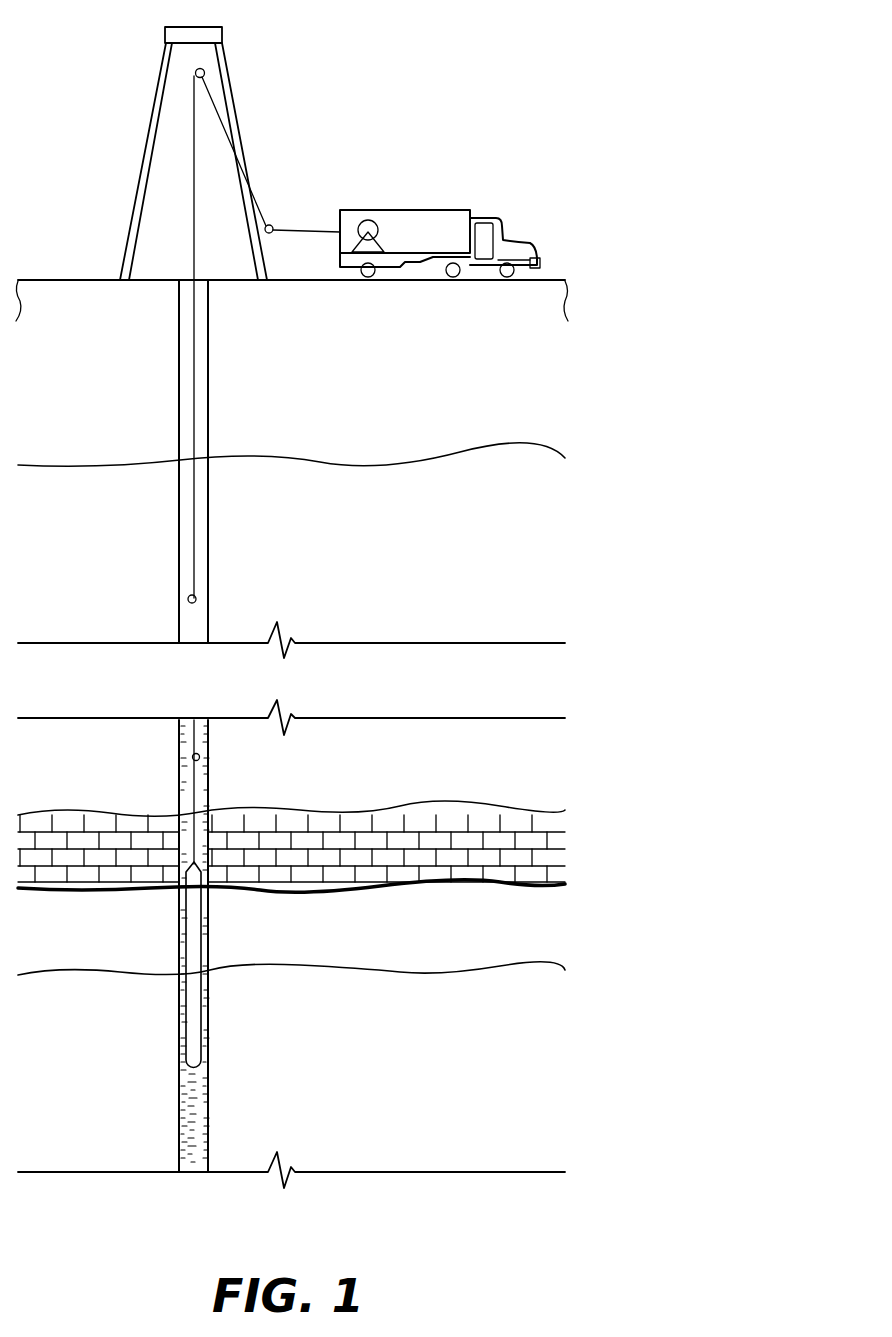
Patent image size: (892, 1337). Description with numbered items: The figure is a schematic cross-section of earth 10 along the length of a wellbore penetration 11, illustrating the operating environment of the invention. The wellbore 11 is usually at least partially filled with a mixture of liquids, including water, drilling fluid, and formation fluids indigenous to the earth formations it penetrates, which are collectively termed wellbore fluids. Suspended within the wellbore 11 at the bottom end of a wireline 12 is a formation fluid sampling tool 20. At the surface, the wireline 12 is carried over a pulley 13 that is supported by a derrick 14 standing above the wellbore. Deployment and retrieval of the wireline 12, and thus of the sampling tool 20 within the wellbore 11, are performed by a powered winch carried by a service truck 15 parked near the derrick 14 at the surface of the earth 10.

The earth 10 is at (512, 559).
The wellbore penetration 11 is at (210, 499).
The wireline 12 is at (193, 603).
The pulley 13 is at (196, 73).
The derrick 14 is at (130, 216).
The service truck 15 is at (413, 232).
The formation fluid sampling tool 20 is at (191, 1020).